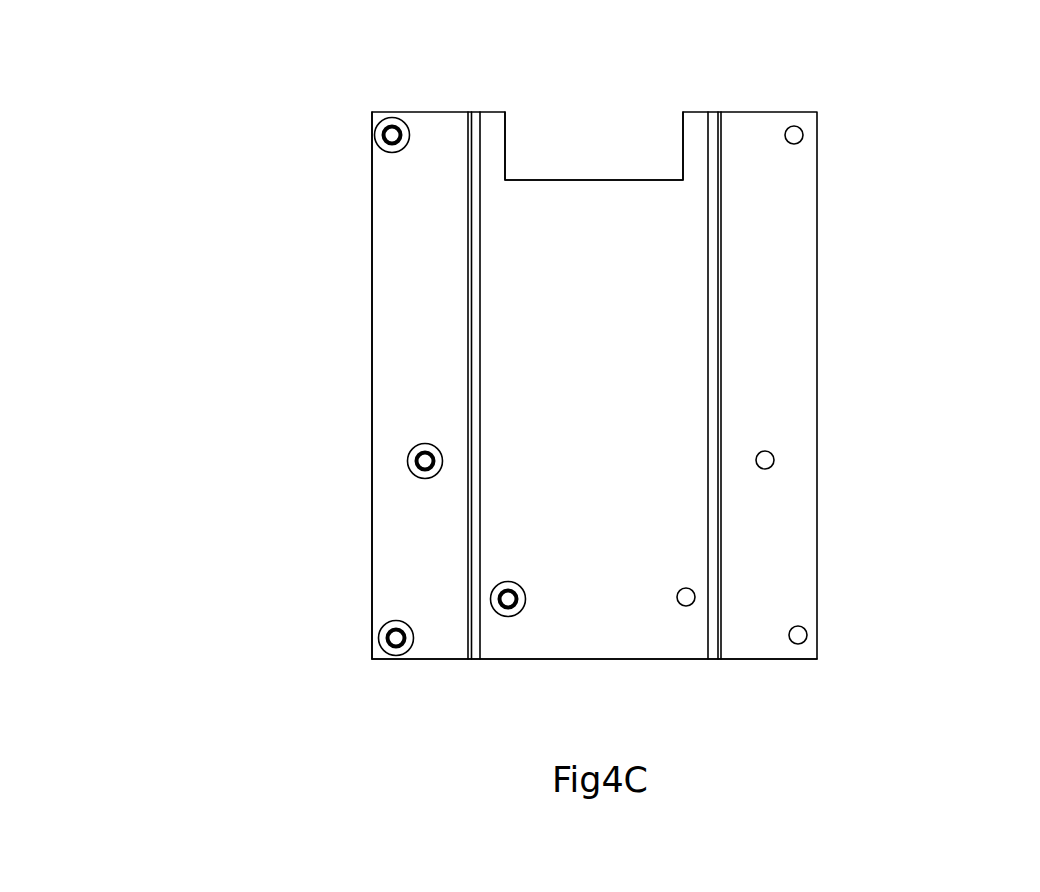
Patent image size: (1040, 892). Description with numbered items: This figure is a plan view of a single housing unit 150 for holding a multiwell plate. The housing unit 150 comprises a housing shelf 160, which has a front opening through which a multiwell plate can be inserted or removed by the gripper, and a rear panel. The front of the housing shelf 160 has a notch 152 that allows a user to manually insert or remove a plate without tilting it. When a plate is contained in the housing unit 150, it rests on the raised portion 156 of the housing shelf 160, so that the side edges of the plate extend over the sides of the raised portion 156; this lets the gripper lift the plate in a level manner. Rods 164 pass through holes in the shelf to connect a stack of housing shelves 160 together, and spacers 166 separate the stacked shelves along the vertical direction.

The housing unit 150 is at (850, 150).
The notch 152 is at (600, 142).
The raised portion 156 is at (620, 642).
The housing shelf 160 is at (385, 575).
The rod 164 is at (392, 135).
The spacer 166 is at (380, 147).